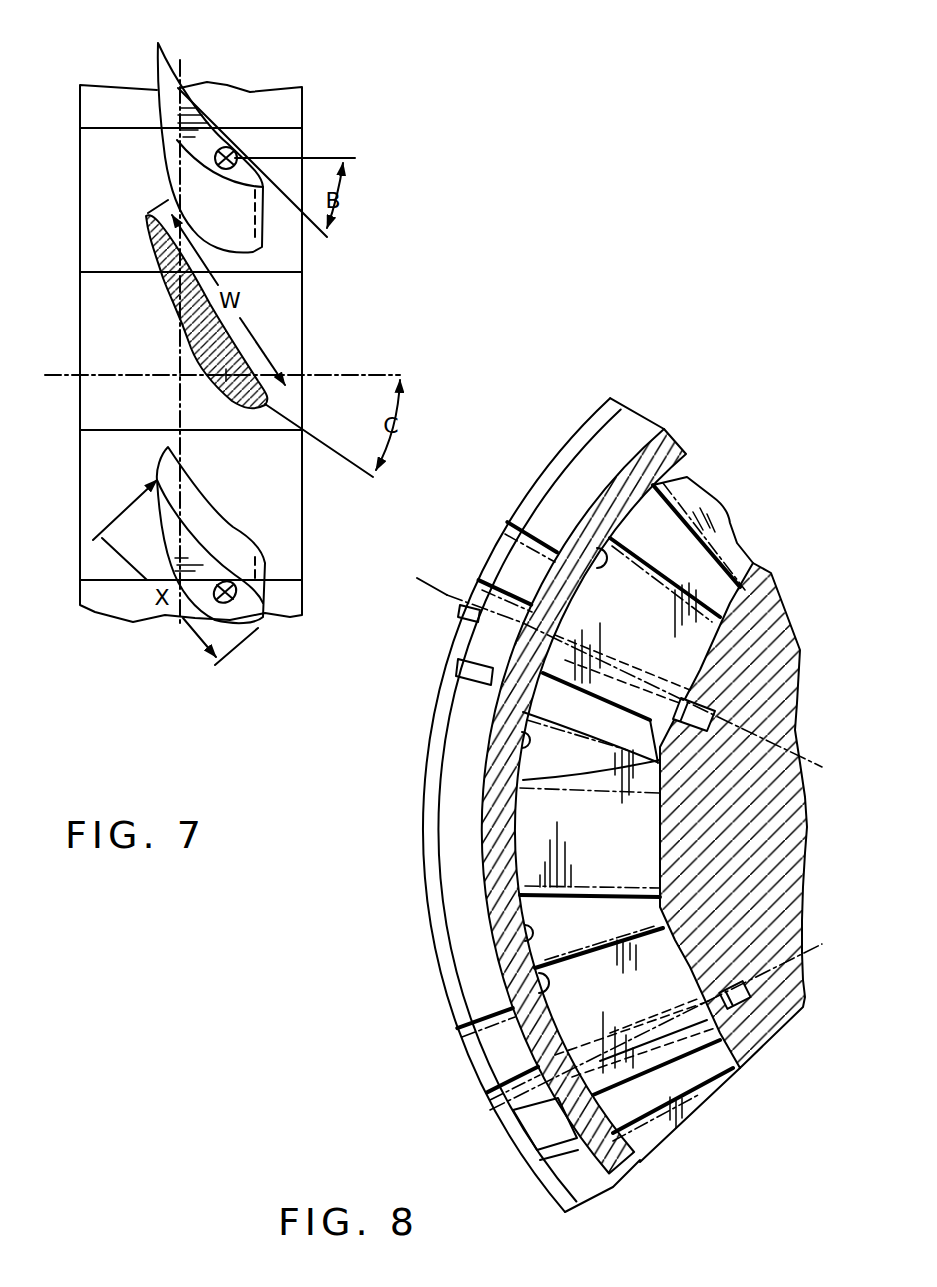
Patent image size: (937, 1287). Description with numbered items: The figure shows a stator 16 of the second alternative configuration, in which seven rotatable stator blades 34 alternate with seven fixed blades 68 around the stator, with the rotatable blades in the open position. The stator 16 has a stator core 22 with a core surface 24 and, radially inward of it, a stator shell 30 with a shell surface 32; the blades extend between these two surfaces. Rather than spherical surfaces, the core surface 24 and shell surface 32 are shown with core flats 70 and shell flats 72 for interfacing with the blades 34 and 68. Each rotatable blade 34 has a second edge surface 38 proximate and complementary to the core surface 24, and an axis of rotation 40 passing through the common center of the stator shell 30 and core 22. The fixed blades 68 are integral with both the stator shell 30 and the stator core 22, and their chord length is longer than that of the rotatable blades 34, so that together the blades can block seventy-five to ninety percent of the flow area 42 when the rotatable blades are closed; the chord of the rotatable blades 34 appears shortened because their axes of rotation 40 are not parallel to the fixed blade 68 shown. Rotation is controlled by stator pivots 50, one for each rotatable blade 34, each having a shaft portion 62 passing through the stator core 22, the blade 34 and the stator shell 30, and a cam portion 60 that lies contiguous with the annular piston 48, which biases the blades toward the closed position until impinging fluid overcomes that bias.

In FIG. 7, the stator 16 is at (319, 106).
In FIG. 8, the stator 16 is at (416, 878).
In FIG. 8, the stator core 22 is at (687, 440).
In FIG. 8, the core surface 24 is at (503, 755).
In FIG. 7, the stator shell 30 is at (91, 579).
In FIG. 8, the stator shell 30 is at (802, 648).
In FIG. 7, the shell surface 32 is at (110, 482).
In FIG. 8, the shell surface 32 is at (754, 562).
In FIG. 7, the stator blades 34 is at (243, 154).
In FIG. 8, the stator blades 34 is at (676, 572).
In FIG. 7, the second edge surface 38 is at (185, 105).
In FIG. 8, the second edge surface 38 is at (490, 1028).
In FIG. 8, the axis of rotation 40 is at (445, 596).
In FIG. 8, the flow area 42 is at (648, 510).
In FIG. 7, the annular piston 48 is at (177, 398).
In FIG. 8, the stator pivots 50 is at (497, 531).
In FIG. 8, the cam portion 60 is at (500, 563).
In FIG. 7, the shaft portion 62 is at (230, 155).
In FIG. 8, the shaft portion 62 is at (553, 636).
In FIG. 7, the fixed blades 68 is at (155, 293).
In FIG. 8, the fixed blades 68 is at (696, 486).
In FIG. 8, the core flats 70 is at (598, 530).
In FIG. 7, the shell flats 72 is at (290, 307).
In FIG. 8, the shell flats 72 is at (522, 792).